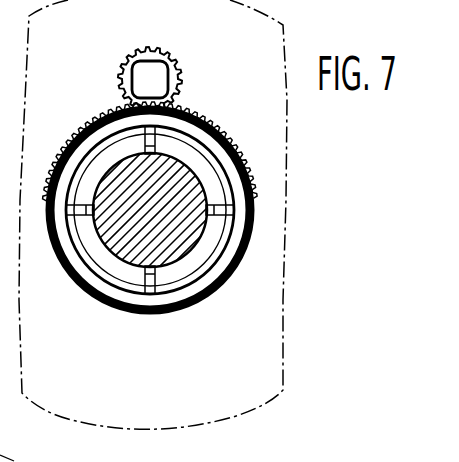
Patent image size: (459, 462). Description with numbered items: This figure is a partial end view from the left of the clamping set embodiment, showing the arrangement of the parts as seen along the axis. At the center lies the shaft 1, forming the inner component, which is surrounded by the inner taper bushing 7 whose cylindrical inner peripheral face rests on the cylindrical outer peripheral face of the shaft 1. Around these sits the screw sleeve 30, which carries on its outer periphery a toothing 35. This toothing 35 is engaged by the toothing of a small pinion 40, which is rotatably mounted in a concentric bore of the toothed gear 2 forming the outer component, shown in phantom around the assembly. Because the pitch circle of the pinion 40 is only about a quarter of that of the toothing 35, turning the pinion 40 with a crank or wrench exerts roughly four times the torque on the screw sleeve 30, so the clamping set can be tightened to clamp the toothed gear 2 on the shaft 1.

The shaft 1 is at (110, 250).
The toothed gear 2 is at (275, 278).
The inner taper bushing 7 is at (198, 163).
The screw sleeve 30 is at (259, 184).
The toothing 35 is at (113, 110).
The pinion 40 is at (185, 74).